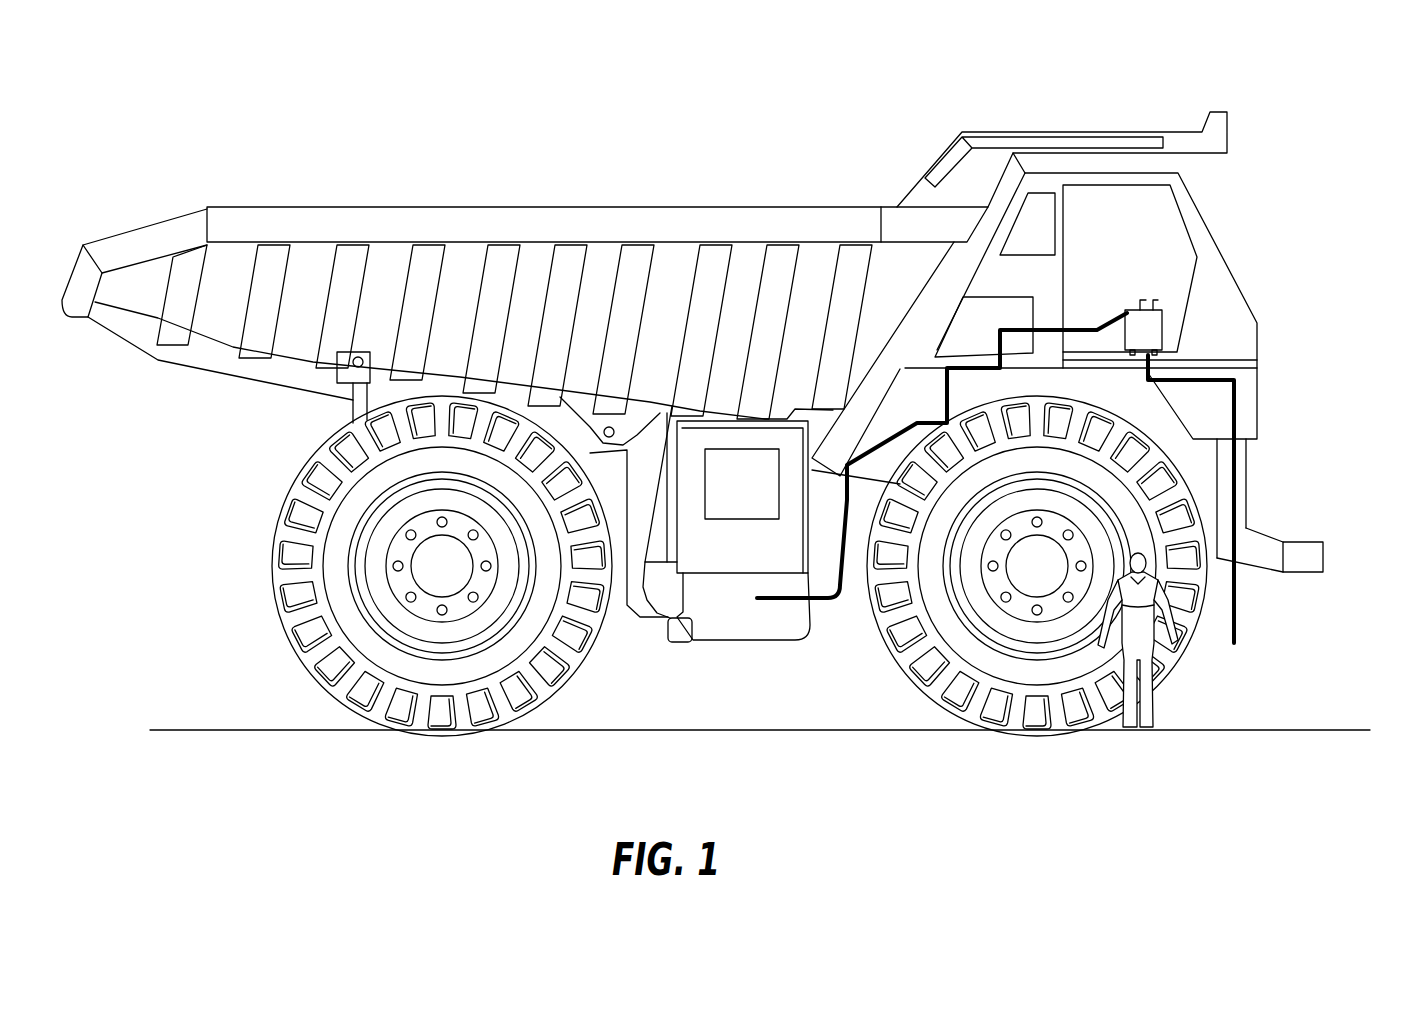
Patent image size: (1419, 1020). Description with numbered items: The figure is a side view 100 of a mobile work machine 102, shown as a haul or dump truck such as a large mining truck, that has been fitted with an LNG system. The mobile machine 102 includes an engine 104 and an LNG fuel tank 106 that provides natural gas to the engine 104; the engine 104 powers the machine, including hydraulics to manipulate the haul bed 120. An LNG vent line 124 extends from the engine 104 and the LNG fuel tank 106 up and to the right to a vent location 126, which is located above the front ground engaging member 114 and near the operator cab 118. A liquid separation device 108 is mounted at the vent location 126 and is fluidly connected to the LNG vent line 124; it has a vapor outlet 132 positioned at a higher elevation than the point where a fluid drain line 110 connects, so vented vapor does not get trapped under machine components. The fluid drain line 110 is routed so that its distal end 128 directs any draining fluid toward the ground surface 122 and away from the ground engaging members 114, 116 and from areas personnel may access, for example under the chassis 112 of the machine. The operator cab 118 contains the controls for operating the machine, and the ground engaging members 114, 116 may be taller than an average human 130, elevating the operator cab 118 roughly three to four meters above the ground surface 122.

The side view 100 is at (247, 113).
The mobile work machine 102 is at (715, 205).
The engine 104 is at (700, 523).
The LNG fuel tank 106 is at (650, 615).
The liquid separation device 108 is at (1153, 332).
The fluid drain line 110 is at (1236, 488).
The chassis 112 is at (1262, 580).
The front ground engaging member 114 is at (1183, 653).
The ground engaging member 116 is at (300, 663).
The operator cab 118 is at (1190, 203).
The haul bed 120 is at (143, 225).
The ground surface 122 is at (1318, 728).
The LNG vent line 124 is at (883, 437).
The vent location 126 is at (1132, 310).
The distal end 128 is at (1236, 630).
The average human 130 is at (1150, 710).
The vapor outlet 132 is at (1160, 310).